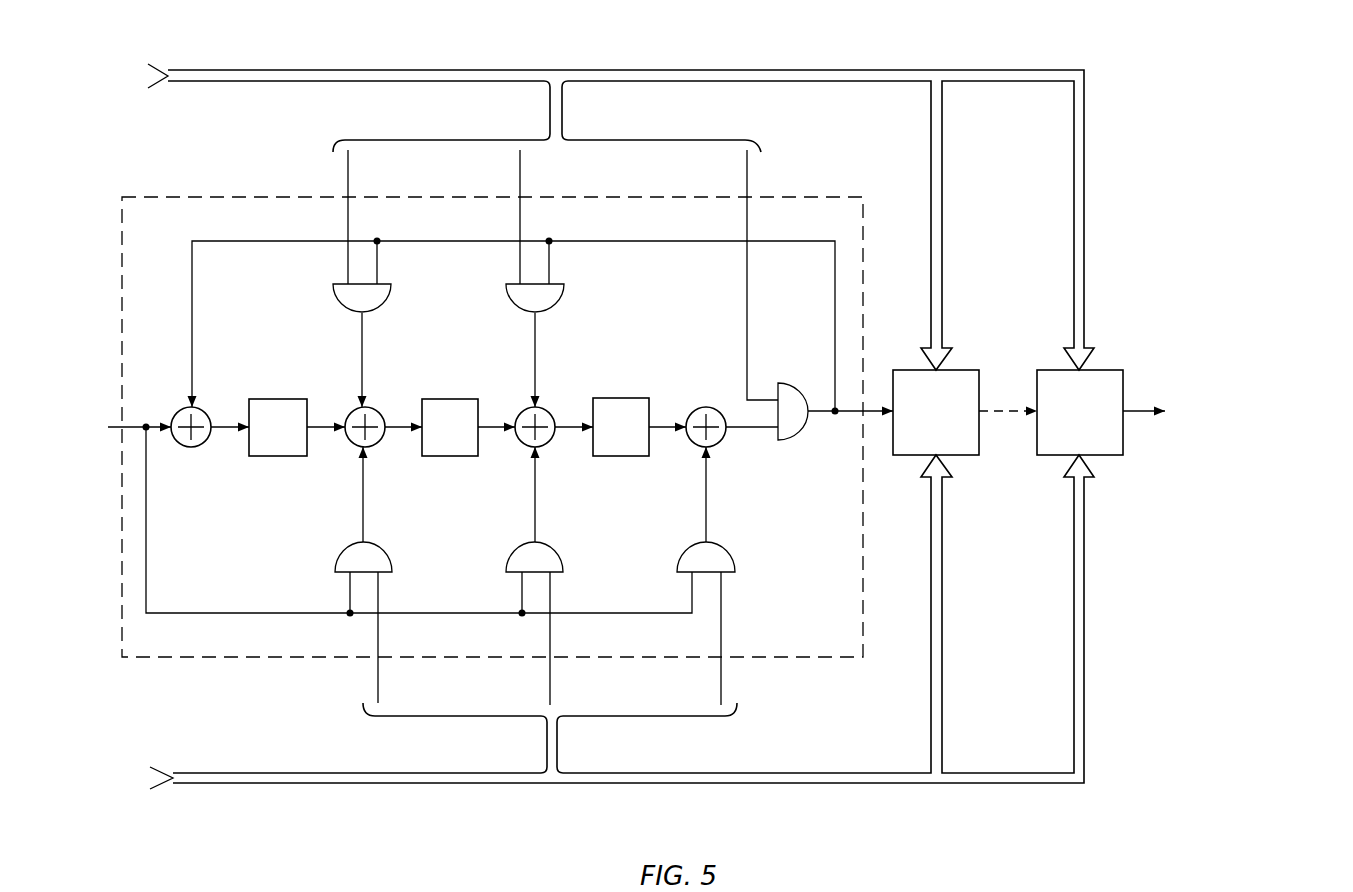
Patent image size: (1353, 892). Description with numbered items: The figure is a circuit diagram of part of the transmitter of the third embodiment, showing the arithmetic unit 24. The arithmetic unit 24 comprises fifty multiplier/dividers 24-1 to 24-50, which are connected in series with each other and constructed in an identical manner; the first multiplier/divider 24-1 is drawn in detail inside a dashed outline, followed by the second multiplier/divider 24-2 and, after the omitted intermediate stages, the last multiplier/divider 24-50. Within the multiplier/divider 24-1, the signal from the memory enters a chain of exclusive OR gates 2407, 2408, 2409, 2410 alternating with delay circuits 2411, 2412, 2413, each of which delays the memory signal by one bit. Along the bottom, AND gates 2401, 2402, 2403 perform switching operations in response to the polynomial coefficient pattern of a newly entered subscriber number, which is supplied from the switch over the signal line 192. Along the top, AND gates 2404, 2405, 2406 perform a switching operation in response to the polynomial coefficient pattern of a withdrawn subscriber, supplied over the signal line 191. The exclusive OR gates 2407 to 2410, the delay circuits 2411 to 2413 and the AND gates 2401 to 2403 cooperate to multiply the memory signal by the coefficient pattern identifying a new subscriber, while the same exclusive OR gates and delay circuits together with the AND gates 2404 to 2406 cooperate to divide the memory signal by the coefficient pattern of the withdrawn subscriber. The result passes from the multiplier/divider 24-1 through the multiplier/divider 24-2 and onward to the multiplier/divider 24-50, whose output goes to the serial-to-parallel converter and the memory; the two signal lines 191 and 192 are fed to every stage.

The arithmetic unit 24 is at (882, 806).
The multiplier/divider 24-1 is at (863, 567).
The multiplier/divider 24-2 is at (975, 457).
The multiplier/divider 24-50 is at (1119, 457).
The signal line 191 is at (345, 70).
The signal line 192 is at (373, 784).
The AND gate 2401 is at (392, 555).
The AND gate 2402 is at (560, 555).
The AND gate 2403 is at (731, 555).
The AND gate 2404 is at (348, 310).
The AND gate 2405 is at (556, 311).
The AND gate 2406 is at (803, 442).
The exclusive OR gate 2407 is at (192, 448).
The exclusive OR gate 2408 is at (381, 446).
The exclusive OR gate 2409 is at (551, 446).
The exclusive OR gate 2410 is at (722, 446).
The delay circuit 2411 is at (290, 458).
The delay circuit 2412 is at (450, 398).
The delay circuit 2413 is at (611, 398).